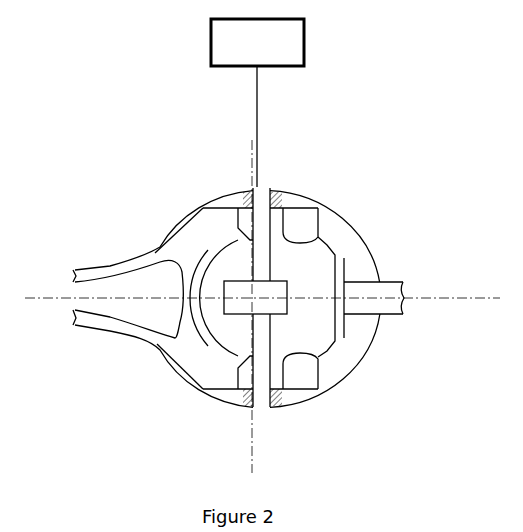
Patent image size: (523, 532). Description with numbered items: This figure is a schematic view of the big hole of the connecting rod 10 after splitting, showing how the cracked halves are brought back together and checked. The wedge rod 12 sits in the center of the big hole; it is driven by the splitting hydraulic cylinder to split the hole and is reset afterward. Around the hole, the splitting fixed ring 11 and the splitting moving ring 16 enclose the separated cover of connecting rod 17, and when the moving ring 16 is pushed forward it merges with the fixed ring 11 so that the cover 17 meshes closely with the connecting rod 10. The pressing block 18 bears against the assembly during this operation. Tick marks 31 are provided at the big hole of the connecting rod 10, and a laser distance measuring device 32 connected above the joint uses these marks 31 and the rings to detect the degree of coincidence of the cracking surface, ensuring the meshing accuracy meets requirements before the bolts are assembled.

The connecting rod 10 is at (193, 250).
The splitting fixed ring 11 is at (238, 328).
The wedge rod 12 is at (242, 281).
The splitting moving ring 16 is at (287, 325).
The cover of connecting rod 17 is at (318, 252).
The pressing block 18 is at (390, 290).
The tick marks 31 is at (251, 400).
The laser distance measuring device 32 is at (312, 40).